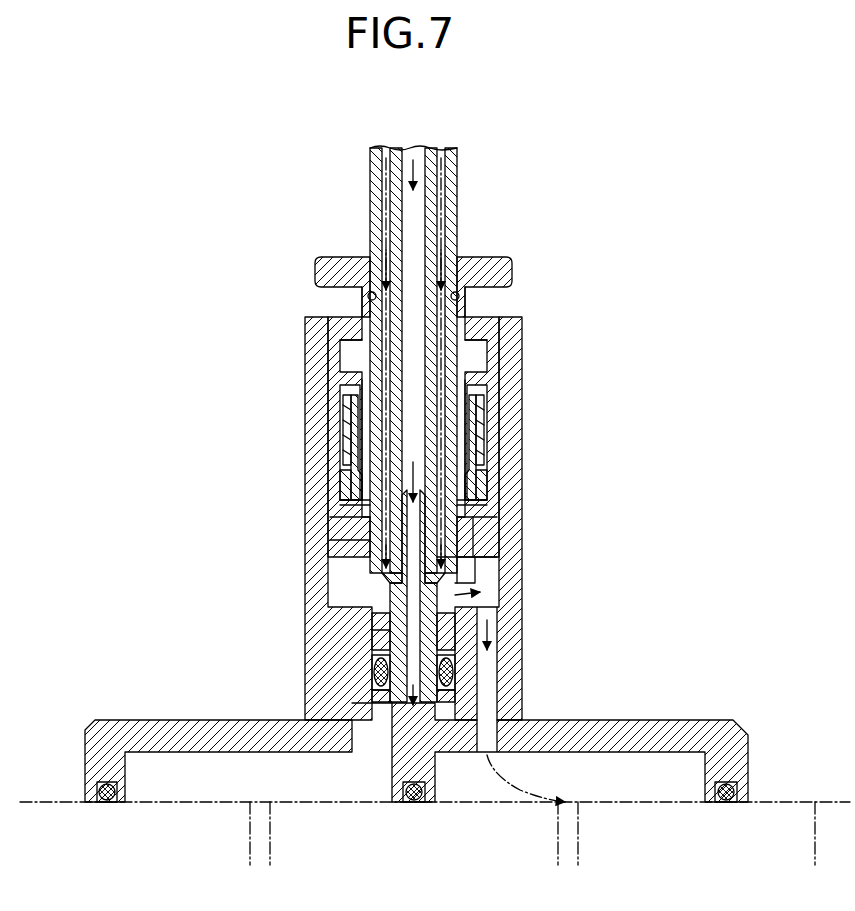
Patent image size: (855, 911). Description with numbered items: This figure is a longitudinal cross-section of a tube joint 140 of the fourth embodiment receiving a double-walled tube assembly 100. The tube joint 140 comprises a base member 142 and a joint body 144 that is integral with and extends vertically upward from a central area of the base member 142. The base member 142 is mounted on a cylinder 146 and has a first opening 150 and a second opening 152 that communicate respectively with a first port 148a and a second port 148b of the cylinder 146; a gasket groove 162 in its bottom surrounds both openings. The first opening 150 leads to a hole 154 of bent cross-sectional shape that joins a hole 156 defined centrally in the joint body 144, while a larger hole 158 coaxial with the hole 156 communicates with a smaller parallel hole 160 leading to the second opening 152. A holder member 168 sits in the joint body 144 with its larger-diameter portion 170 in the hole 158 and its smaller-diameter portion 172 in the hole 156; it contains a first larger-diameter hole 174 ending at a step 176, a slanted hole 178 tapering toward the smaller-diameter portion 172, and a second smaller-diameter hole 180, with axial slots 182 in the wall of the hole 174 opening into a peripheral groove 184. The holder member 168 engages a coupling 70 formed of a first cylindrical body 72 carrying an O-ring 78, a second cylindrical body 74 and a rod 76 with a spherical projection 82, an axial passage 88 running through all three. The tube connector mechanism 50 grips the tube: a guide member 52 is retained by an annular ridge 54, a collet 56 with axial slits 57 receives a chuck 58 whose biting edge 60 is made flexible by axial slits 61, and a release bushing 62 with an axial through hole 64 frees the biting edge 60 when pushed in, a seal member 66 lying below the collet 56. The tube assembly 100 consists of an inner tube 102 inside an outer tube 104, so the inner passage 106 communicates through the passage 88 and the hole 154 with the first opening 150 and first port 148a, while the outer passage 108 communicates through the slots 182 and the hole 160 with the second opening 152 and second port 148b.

The tube connector mechanism 50 is at (512, 244).
The guide member 52 is at (495, 317).
The annular ridge 54 is at (500, 362).
The collet 56 is at (485, 378).
The axial slits 57 is at (350, 433).
The chuck 58 is at (495, 412).
The biting edge 60 is at (505, 460).
The axial slits 61 is at (348, 450).
The release bushing 62 is at (475, 265).
The axial through hole 64 is at (365, 310).
The seal member 66 is at (345, 495).
The coupling 70 is at (378, 628).
The first cylindrical body 72 is at (382, 686).
The second cylindrical body 74 is at (393, 590).
The rod 76 is at (390, 550).
The O-ring 78 is at (377, 668).
The spherical projection 82 is at (340, 505).
The passage 88 is at (452, 755).
The double-walled tube assembly 100 is at (465, 161).
The inner tube 102 is at (433, 148).
The outer tube 104 is at (375, 177).
The inner passage 106 is at (415, 198).
The outer passage 108 is at (386, 150).
The tube joint 140 is at (582, 378).
The base member 142 is at (603, 712).
The joint body 144 is at (532, 505).
The cylinder 146 is at (797, 812).
The first port 148a is at (248, 851).
The second port 148b is at (580, 843).
The first opening 150 is at (380, 790).
The second opening 152 is at (526, 790).
The hole 154 is at (358, 785).
The hole 156 is at (440, 625).
The hole 158 is at (490, 323).
The hole 160 is at (480, 698).
The gasket groove 162 is at (730, 800).
The holder member 168 is at (478, 530).
The larger-diameter portion 170 is at (336, 532).
The smaller-diameter portion 172 is at (380, 640).
The first larger-diameter hole 174 is at (463, 545).
The step 176 is at (475, 580).
The slanted hole 178 is at (385, 598).
The second smaller-diameter hole 180 is at (450, 640).
The axial slots 182 is at (517, 485).
The peripheral groove 184 is at (487, 590).